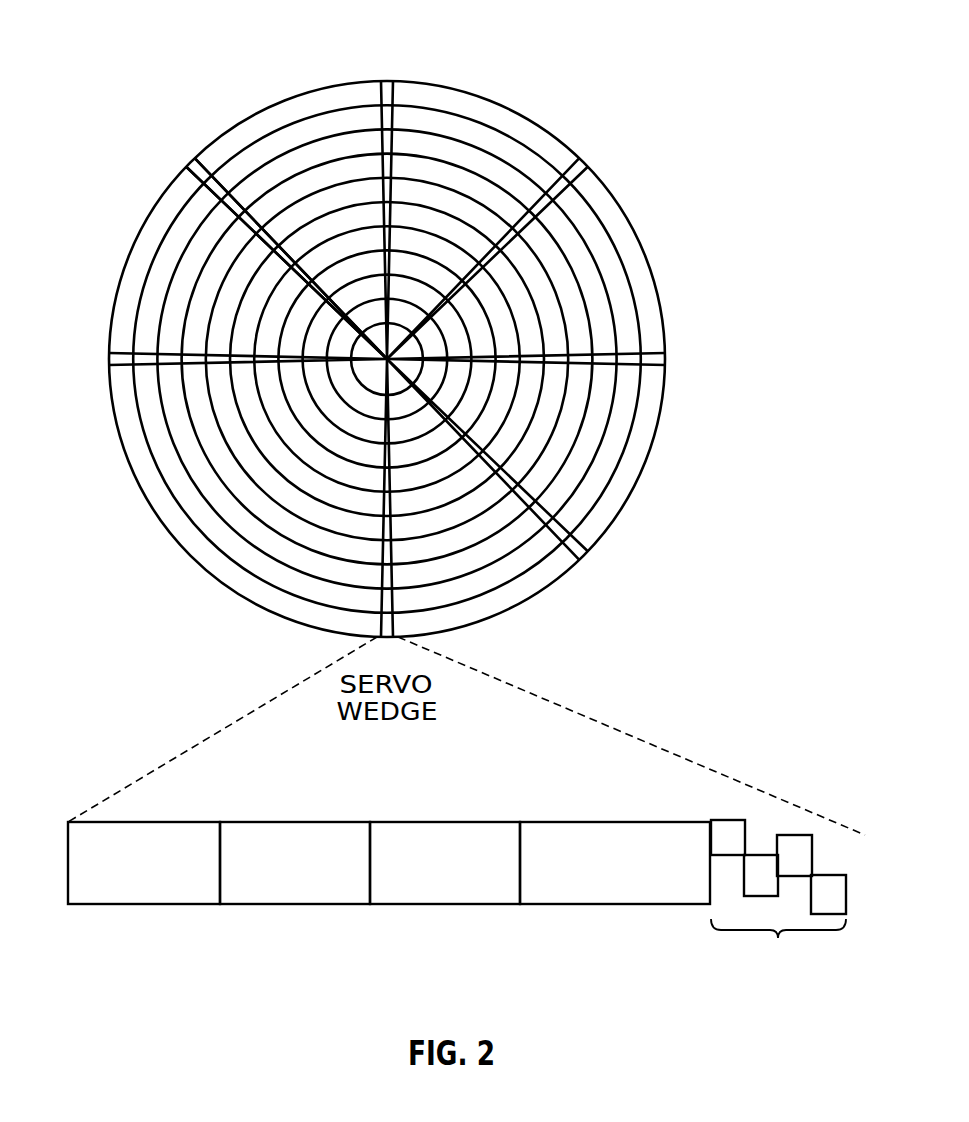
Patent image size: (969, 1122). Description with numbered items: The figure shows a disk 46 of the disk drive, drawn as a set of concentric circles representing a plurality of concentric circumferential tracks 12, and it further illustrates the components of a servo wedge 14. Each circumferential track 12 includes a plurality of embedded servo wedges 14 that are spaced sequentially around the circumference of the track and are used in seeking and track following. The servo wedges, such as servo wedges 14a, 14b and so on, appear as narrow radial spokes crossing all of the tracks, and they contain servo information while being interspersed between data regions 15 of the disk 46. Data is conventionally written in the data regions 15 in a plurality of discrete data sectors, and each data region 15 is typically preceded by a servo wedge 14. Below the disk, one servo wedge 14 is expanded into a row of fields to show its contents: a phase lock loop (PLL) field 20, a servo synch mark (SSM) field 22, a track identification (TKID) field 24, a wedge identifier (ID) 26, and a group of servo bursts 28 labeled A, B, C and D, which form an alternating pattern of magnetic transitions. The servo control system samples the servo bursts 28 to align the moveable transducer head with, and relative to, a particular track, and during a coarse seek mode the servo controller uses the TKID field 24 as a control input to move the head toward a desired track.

The disk 46 is at (210, 58).
The circumferential track 12 is at (151, 250).
The data region 15 is at (456, 125).
The servo wedge 14 is at (386, 85).
The servo wedge 14a is at (193, 167).
The servo wedge 14b is at (117, 358).
The phase lock loop (PLL) field 20 is at (93, 904).
The servo synch mark (SSM) field 22 is at (243, 904).
The track identification (TKID) field 24 is at (393, 904).
The wedge identifier (ID) 26 is at (546, 904).
The group of servo bursts 28 is at (719, 810).